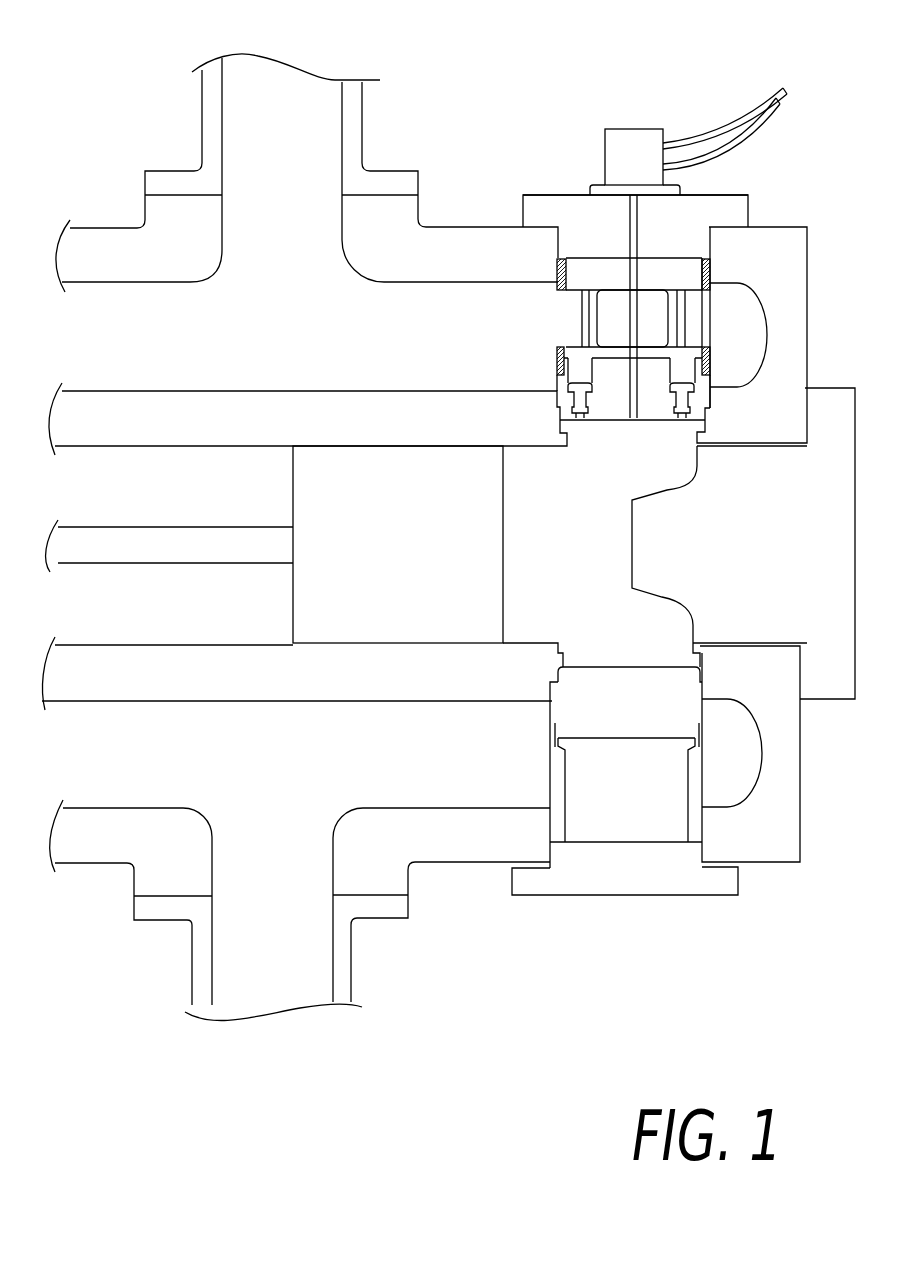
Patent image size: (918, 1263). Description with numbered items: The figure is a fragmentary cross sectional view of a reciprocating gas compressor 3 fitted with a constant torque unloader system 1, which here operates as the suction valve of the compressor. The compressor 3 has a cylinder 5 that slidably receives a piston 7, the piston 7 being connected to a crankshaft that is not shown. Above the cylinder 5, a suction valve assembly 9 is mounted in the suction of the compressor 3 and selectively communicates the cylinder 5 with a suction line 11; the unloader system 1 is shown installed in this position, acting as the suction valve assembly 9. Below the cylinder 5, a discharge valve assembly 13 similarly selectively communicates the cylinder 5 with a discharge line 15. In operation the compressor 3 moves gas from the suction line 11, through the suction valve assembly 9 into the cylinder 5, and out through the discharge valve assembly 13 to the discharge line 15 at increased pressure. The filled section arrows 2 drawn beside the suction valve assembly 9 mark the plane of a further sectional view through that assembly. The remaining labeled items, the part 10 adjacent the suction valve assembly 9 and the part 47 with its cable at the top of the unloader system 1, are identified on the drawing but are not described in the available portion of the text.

The constant torque unloader system 1 is at (721, 89).
The section line 2 is at (532, 387).
The reciprocating compressor 3 is at (460, 943).
The cylinder 5 is at (575, 557).
The piston 7 is at (412, 566).
The suction valve assembly 9 is at (557, 383).
The spacer plate 10 is at (561, 243).
The suction line 11 is at (420, 352).
The discharge valve assembly 13 is at (629, 663).
The discharge line 15 is at (410, 771).
The connector housing 47 is at (645, 125).